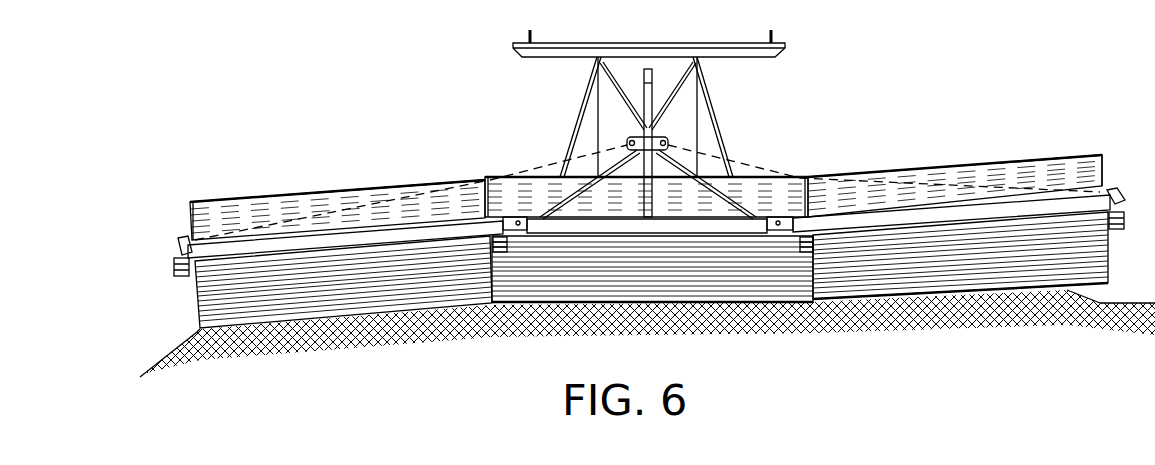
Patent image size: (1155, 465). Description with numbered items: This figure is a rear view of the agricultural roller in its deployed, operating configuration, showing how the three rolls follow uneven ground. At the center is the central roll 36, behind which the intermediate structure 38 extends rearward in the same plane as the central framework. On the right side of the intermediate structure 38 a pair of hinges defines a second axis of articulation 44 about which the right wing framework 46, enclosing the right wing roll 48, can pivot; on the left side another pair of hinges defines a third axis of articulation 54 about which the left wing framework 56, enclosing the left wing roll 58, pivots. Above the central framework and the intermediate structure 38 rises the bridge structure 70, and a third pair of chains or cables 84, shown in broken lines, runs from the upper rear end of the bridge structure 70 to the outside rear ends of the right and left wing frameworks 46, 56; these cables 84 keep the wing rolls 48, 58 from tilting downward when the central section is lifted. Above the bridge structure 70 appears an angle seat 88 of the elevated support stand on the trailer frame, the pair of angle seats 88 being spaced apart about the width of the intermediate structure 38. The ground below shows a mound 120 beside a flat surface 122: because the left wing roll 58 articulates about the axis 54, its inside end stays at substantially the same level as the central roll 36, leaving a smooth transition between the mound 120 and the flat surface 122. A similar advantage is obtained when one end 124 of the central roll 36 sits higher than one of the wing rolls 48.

The central roll 36 is at (517, 221).
The intermediate structure 38 is at (732, 222).
The second axis of articulation 44 is at (432, 180).
The right wing framework 46 is at (183, 242).
The right wing roll 48 is at (213, 200).
The third axis of articulation 54 is at (780, 218).
The left wing framework 56 is at (938, 168).
The left wing roll 58 is at (1027, 170).
The bridge structure 70 is at (625, 147).
The chains or cables 84 is at (363, 207).
The angle seat 88 is at (783, 38).
The mound 120 is at (1045, 355).
The flat surface 122 is at (730, 305).
The one end of the central roll 124 is at (500, 305).